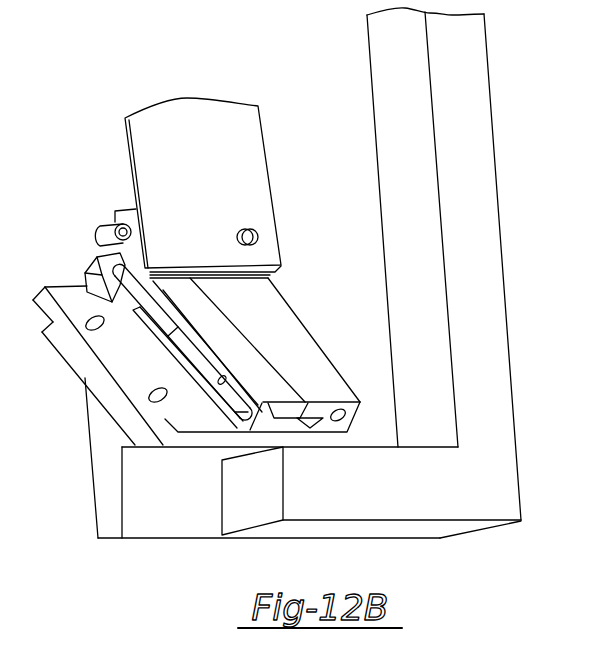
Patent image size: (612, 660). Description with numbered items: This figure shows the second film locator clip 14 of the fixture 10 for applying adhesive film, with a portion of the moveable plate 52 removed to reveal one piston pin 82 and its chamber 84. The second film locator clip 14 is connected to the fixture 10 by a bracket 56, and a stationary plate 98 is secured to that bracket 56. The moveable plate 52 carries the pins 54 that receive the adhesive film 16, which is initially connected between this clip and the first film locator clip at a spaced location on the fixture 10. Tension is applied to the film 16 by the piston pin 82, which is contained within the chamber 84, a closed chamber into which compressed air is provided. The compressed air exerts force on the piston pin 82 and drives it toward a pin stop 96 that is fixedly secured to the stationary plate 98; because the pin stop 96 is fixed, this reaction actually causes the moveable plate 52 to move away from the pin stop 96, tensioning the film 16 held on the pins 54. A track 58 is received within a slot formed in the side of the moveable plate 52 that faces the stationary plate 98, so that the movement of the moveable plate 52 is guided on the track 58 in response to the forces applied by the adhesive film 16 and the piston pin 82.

The fixture 10 is at (487, 333).
The second film locator clip 14 is at (266, 282).
The adhesive film 16 is at (177, 145).
The moveable plate 52 is at (320, 380).
The pins 54 is at (240, 228).
The bracket 56 is at (118, 432).
The track 58 is at (278, 423).
The piston pins 82 is at (188, 343).
The chamber 84 is at (248, 410).
The pin stops 96 is at (102, 273).
The stationary plate 98 is at (110, 367).